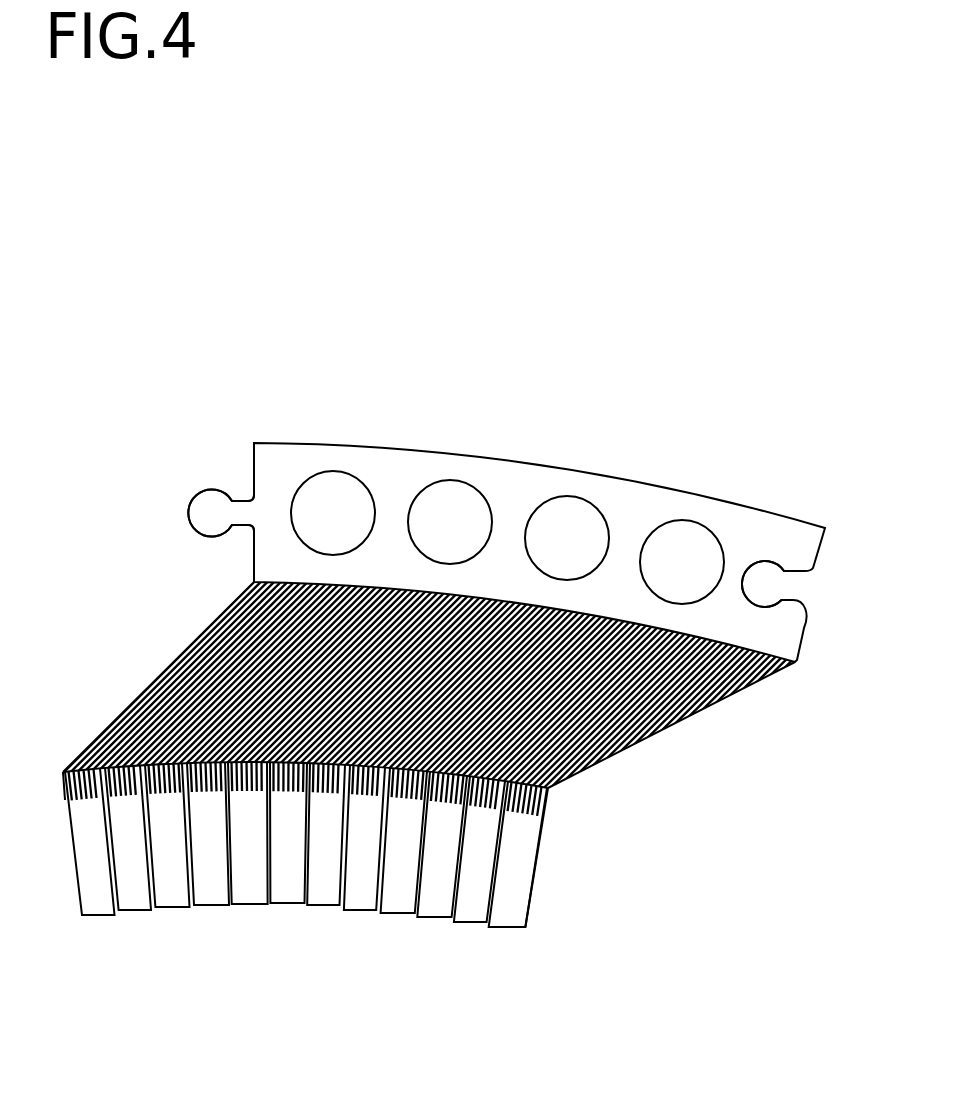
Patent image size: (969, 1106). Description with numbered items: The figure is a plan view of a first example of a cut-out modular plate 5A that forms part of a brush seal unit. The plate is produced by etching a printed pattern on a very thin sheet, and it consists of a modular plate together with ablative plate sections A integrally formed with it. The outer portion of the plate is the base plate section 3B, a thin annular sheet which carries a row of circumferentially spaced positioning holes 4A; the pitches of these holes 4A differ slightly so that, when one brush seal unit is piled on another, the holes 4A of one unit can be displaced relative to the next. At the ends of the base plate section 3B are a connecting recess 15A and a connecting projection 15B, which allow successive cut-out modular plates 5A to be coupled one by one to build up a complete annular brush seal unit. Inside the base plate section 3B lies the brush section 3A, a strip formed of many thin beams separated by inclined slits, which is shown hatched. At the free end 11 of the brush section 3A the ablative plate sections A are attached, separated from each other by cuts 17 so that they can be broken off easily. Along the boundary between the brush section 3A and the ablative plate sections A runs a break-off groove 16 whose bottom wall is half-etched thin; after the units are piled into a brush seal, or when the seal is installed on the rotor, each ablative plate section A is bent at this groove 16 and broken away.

The cut-out modular plate 5A is at (611, 307).
The base plate section 3B is at (541, 483).
The brush section 3A is at (627, 727).
The positioning holes 4A is at (443, 498).
The connecting recess 15A is at (765, 583).
The connecting projection 15B is at (200, 512).
The cuts 17 is at (344, 818).
The break-off groove 16 is at (62, 795).
The free end 11 is at (548, 787).
The ablative plate sections A is at (90, 900).